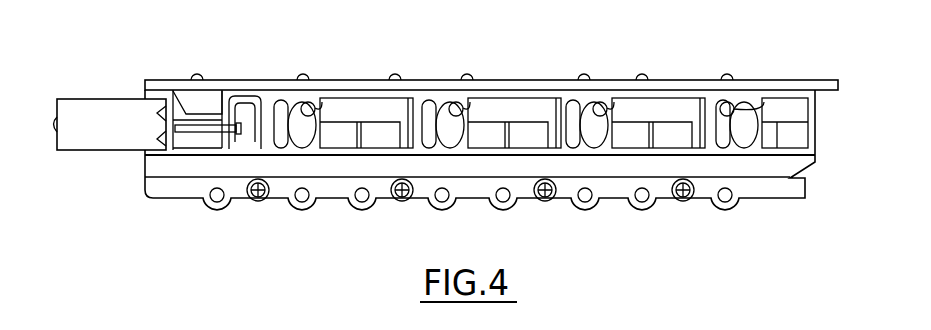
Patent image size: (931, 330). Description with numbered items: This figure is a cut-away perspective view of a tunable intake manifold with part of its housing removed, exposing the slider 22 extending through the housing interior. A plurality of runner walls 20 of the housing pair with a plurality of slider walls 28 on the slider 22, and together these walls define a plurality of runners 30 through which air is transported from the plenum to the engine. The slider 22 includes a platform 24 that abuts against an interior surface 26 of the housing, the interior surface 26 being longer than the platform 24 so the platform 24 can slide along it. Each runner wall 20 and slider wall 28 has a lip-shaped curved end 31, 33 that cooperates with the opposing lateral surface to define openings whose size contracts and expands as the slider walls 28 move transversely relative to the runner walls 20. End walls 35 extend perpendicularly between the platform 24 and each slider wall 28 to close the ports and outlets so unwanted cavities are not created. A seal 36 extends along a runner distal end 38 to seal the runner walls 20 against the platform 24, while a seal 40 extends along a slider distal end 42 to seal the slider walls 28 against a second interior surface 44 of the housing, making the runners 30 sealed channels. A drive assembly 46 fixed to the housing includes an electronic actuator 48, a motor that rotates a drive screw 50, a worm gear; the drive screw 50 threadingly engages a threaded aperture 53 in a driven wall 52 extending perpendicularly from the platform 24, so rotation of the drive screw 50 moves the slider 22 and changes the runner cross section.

The runner walls 20 is at (289, 160).
The slider 22 is at (683, 90).
The platform 24 is at (527, 91).
The interior surface 26 is at (193, 89).
The slider walls 28 is at (278, 120).
The runners 30 is at (288, 140).
The curved end 31 is at (322, 110).
The curved end 33 is at (257, 97).
The end walls 35 is at (238, 142).
The seal 36 is at (313, 100).
The runner distal end 38 is at (322, 104).
The seal 40 is at (258, 202).
The slider distal end 42 is at (270, 143).
The second interior surface 44 is at (497, 138).
The drive assembly 46 is at (104, 160).
The electronic actuator 48 is at (80, 98).
The drive screw 50 is at (197, 128).
The driven wall 52 is at (210, 135).
The threaded aperture 53 is at (232, 128).